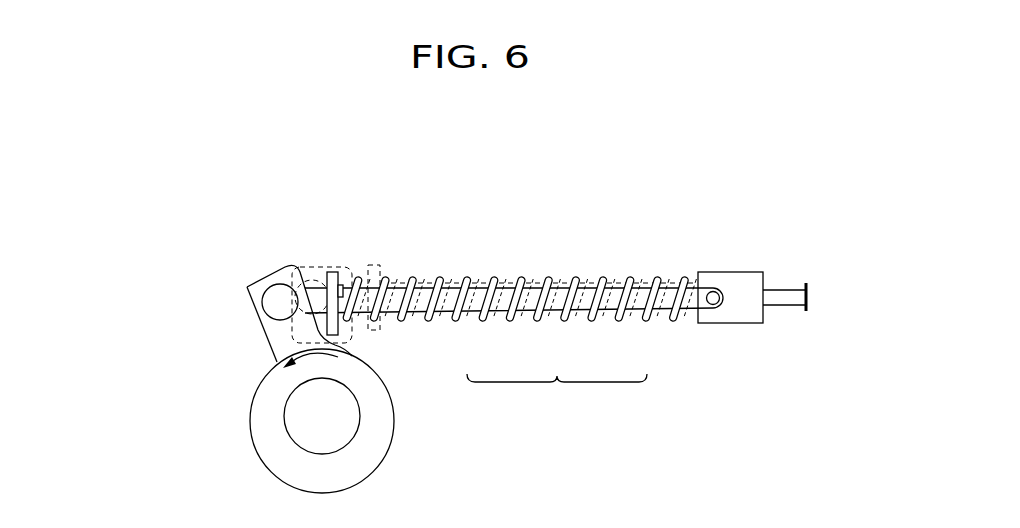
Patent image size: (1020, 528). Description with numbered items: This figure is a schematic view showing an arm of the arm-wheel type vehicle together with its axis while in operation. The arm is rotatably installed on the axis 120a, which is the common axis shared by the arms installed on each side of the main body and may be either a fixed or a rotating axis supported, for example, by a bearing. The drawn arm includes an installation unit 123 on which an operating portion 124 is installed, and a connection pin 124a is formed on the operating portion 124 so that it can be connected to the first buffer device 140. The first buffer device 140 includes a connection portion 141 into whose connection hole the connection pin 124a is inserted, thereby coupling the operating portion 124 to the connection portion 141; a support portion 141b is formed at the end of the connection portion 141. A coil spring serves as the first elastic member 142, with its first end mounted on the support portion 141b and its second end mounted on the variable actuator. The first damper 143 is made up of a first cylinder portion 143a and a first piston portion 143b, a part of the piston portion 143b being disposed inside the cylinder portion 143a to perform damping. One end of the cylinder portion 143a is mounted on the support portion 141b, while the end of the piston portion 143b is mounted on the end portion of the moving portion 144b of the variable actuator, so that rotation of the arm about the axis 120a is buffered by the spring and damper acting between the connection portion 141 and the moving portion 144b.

The axis 120a is at (300, 435).
The installation unit 123 is at (257, 398).
The operating portion 124 is at (247, 289).
The connection pin 124a is at (274, 295).
The first buffer device 140 is at (581, 236).
The connection portion 141 is at (321, 284).
The support portion 141b is at (334, 274).
The first elastic member 142 is at (510, 282).
The first damper 143 is at (557, 391).
The first cylinder portion 143a is at (483, 305).
The first piston portion 143b is at (632, 303).
The moving portion 144b is at (785, 297).